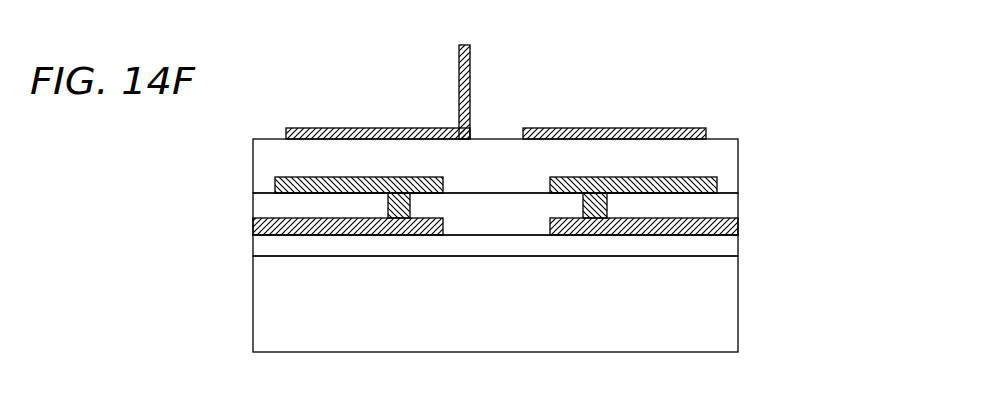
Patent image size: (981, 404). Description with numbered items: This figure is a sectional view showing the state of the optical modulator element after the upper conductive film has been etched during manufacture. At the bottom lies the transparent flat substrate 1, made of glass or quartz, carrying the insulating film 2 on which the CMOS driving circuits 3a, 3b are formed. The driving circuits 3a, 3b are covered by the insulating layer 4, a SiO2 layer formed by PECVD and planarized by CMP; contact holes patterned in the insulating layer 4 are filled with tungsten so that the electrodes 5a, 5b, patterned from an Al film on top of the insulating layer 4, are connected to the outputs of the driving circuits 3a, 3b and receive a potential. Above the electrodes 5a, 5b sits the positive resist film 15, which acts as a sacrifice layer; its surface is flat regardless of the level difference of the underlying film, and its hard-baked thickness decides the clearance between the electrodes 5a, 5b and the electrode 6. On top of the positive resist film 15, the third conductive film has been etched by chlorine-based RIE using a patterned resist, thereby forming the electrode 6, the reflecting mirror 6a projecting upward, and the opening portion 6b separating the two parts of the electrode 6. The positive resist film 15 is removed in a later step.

The flat substrate 1 is at (735, 303).
The insulating film 2 is at (735, 251).
The driving circuit 3a is at (253, 228).
The driving circuit 3b is at (738, 228).
The insulating layer 4 is at (733, 203).
The electrode 5a is at (275, 185).
The electrode 5b is at (717, 182).
The electrode 6 is at (305, 128).
The reflecting mirror 6a is at (470, 55).
The opening portion 6b is at (506, 124).
The positive resist film 15 is at (733, 157).